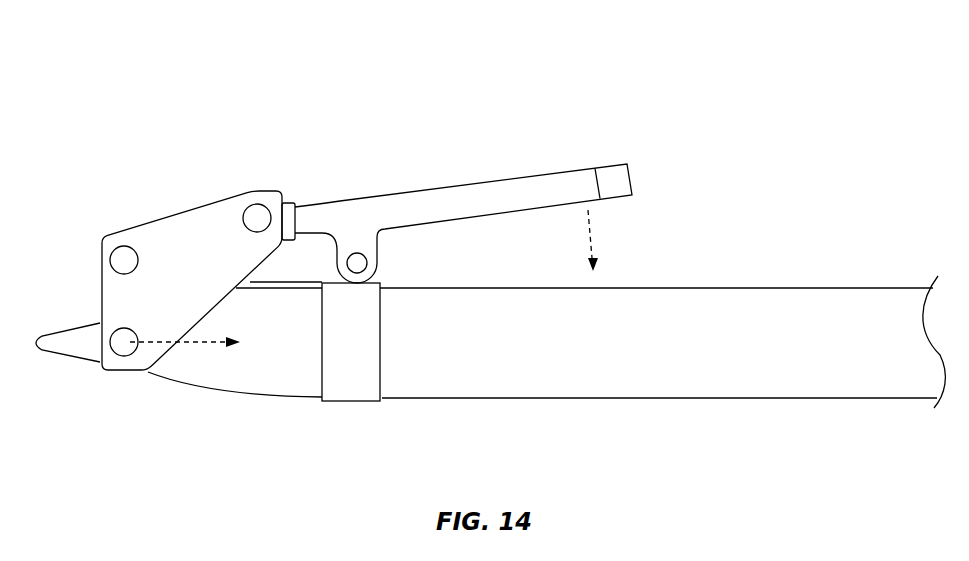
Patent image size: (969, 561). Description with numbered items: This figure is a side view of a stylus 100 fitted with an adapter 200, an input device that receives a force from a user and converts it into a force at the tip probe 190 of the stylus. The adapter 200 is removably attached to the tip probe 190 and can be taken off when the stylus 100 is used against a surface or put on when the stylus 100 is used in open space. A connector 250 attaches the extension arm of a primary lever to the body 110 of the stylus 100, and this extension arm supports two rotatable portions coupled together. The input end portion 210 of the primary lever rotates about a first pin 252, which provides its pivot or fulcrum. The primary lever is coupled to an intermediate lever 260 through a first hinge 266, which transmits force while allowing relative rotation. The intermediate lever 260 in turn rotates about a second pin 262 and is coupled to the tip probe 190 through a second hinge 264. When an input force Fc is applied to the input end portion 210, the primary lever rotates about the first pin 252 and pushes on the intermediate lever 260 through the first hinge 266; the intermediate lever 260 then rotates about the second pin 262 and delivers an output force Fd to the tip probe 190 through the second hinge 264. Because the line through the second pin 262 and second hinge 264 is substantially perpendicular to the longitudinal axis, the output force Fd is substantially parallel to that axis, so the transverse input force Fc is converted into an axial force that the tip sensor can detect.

The stylus 100 is at (118, 105).
The body 110 is at (753, 399).
The tip probe 190 is at (87, 343).
The adapter 200 is at (180, 210).
The input end portion 210 is at (556, 185).
The connector 250 is at (350, 391).
The first pin 252 is at (357, 262).
The intermediate lever 260 is at (75, 236).
The second pin 262 is at (118, 259).
The second hinge 264 is at (127, 343).
The first hinge 266 is at (257, 204).
The input force Fc is at (591, 232).
The output force Fd is at (200, 343).